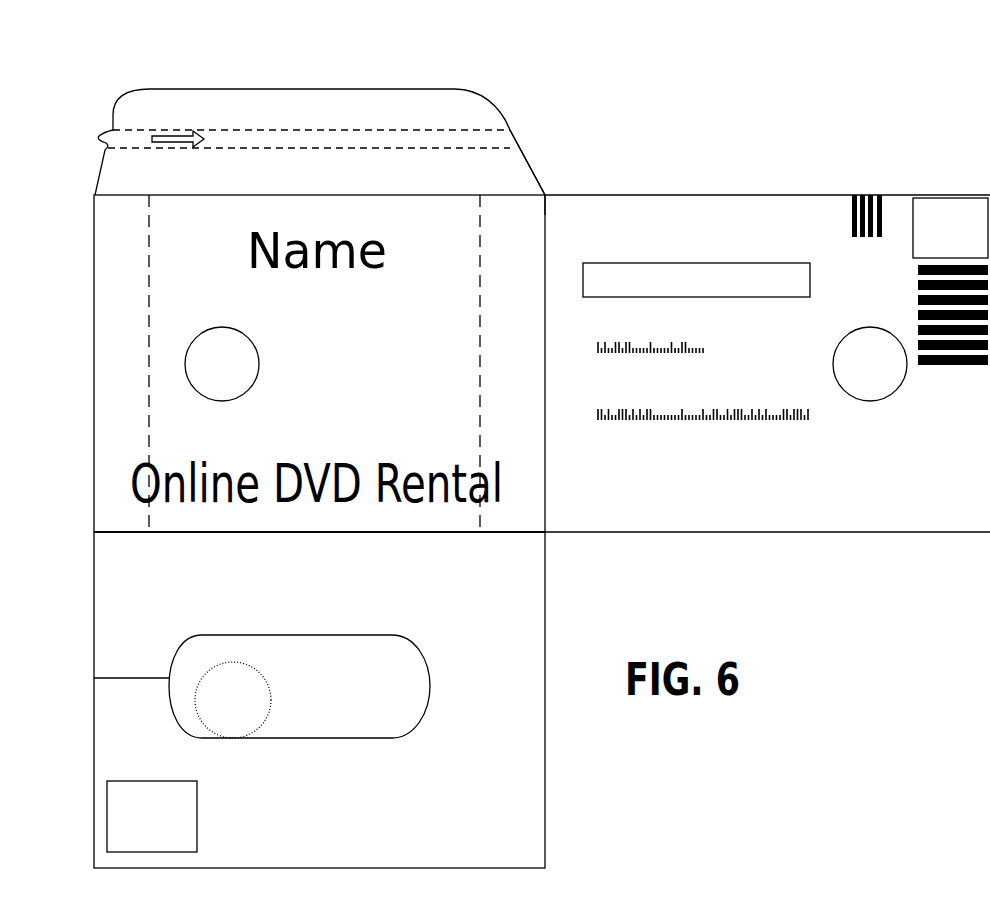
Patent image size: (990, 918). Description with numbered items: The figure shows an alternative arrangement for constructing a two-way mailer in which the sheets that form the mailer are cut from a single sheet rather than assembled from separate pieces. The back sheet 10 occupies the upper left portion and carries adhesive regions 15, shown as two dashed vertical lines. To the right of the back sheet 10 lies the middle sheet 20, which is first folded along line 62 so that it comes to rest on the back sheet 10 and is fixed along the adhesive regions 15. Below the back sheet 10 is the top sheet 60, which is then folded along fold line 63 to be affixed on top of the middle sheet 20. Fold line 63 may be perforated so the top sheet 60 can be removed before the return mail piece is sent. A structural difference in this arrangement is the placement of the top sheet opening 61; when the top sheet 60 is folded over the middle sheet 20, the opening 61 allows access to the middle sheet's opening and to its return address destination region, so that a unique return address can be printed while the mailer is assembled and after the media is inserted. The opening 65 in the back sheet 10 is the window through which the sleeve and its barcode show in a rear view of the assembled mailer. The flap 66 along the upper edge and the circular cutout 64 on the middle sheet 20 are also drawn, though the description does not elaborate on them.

The back sheet 10 is at (168, 230).
The adhesive regions 15 is at (110, 222).
The middle sheet 20 is at (768, 513).
The top sheet 60 is at (522, 595).
The top sheet opening 61 is at (327, 634).
The fold line 62 is at (545, 195).
The fold line 63 is at (180, 532).
The thumb notch circle 64 is at (878, 400).
The opening 65 is at (259, 364).
The sealing flap 66 is at (350, 95).